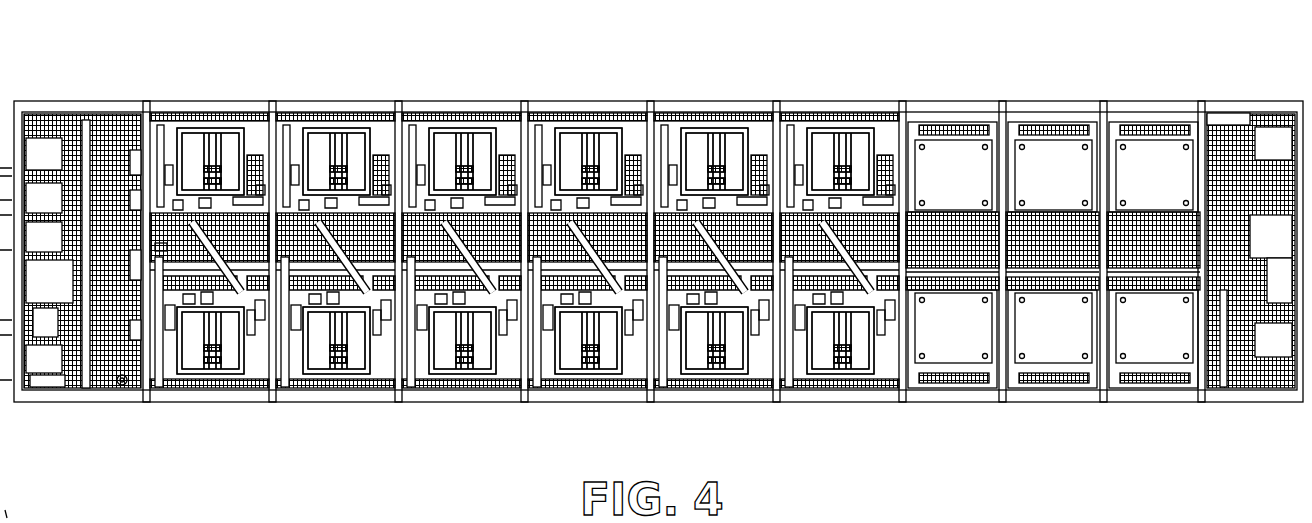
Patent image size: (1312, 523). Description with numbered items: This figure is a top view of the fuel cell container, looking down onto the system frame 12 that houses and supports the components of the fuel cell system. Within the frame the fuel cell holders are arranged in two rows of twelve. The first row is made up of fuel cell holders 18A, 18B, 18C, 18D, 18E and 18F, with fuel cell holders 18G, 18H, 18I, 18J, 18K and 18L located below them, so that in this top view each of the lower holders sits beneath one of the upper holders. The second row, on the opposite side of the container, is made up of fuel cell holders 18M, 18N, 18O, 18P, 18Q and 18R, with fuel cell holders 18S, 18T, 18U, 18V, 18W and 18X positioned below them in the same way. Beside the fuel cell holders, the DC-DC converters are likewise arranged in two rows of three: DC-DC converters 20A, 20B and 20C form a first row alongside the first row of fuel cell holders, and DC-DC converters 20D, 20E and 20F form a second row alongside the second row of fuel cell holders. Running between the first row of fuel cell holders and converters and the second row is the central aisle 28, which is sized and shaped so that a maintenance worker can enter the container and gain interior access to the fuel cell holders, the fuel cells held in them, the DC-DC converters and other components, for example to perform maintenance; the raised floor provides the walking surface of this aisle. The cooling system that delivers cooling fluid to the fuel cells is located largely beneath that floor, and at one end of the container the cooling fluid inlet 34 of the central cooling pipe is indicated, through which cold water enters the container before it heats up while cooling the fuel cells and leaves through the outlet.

The system frame 12 is at (1250, 105).
The fuel cell holder 18A is at (185, 345).
The fuel cell holder 18B is at (311, 345).
The fuel cell holder 18C is at (438, 345).
The fuel cell holder 18D is at (564, 345).
The fuel cell holder 18E is at (690, 345).
The fuel cell holder 18F is at (817, 345).
The fuel cell holder 18G is at (222, 373).
The fuel cell holder 18H is at (348, 373).
The fuel cell holder 18I is at (474, 373).
The fuel cell holder 18J is at (600, 373).
The fuel cell holder 18K is at (726, 373).
The fuel cell holder 18L is at (854, 373).
The fuel cell holder 18M is at (247, 148).
The fuel cell holder 18N is at (371, 148).
The fuel cell holder 18O is at (497, 148).
The fuel cell holder 18P is at (623, 148).
The fuel cell holder 18Q is at (750, 148).
The fuel cell holder 18R is at (878, 148).
The fuel cell holder 18S is at (190, 128).
The fuel cell holder 18T is at (319, 128).
The fuel cell holder 18U is at (446, 128).
The fuel cell holder 18V is at (572, 128).
The fuel cell holder 18W is at (701, 128).
The fuel cell holder 18X is at (829, 128).
The DC-DC converter 20A is at (955, 360).
The DC-DC converter 20B is at (1055, 360).
The DC-DC converter 20C is at (1153, 360).
The DC-DC converter 20D is at (945, 150).
The DC-DC converter 20E is at (1043, 150).
The DC-DC converter 20F is at (1143, 150).
The central aisle 28 is at (162, 247).
The cooling fluid inlet 34 is at (10, 504).